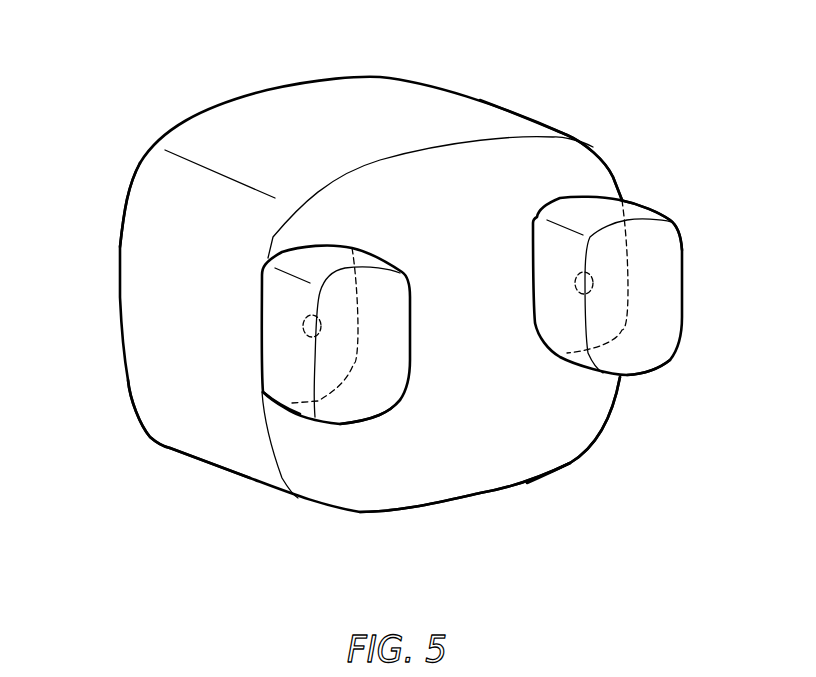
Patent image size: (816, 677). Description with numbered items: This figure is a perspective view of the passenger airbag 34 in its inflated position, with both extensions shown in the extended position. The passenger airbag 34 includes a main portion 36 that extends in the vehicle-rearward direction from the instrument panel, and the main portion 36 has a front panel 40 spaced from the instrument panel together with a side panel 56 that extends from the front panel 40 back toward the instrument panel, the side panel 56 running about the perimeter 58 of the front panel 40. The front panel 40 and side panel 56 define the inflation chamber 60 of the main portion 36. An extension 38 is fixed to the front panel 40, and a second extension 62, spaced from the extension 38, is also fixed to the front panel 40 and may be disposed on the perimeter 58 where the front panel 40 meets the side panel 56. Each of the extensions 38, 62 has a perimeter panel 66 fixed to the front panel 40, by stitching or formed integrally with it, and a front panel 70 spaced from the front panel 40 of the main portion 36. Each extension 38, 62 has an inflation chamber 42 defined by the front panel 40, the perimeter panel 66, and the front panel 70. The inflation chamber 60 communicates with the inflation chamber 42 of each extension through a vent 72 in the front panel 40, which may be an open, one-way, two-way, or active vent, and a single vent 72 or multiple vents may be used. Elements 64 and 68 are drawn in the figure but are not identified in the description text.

The passenger airbag 34 is at (478, 69).
The main portion 36 is at (593, 147).
The extension 38 is at (348, 430).
The front panel 40 is at (423, 190).
The inflation chamber 42 is at (370, 367).
The side panel 56 is at (190, 457).
The perimeter 58 is at (273, 242).
The inflation chamber 60 is at (485, 448).
The second extension 62 is at (672, 222).
The front lower surface 64 is at (510, 390).
The perimeter panel 66 is at (635, 202).
The projection end face 68 is at (312, 365).
The front panel 70 is at (657, 370).
The vent 72 is at (302, 323).